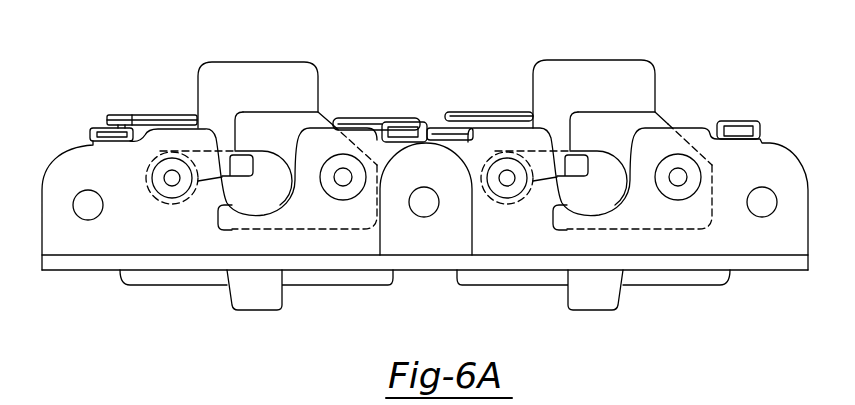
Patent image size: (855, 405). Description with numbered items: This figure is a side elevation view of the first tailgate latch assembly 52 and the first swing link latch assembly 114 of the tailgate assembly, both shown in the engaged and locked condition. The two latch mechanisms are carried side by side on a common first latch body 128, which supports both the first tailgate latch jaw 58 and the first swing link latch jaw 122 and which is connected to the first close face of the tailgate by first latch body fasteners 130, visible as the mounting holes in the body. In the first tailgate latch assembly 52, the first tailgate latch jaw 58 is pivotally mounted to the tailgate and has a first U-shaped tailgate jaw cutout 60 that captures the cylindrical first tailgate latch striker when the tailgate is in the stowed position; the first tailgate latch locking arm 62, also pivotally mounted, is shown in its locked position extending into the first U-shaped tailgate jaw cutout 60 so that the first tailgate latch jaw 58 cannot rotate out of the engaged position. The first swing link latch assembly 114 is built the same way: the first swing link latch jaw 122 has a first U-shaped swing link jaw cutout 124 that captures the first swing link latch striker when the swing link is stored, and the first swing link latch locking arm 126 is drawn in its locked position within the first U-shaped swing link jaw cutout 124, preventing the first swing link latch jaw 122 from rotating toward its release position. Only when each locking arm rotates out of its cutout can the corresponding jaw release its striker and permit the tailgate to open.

The first tailgate latch assembly 52 is at (676, 340).
The first tailgate latch jaw 58 is at (608, 130).
The first U-shaped tailgate jaw cutout 60 is at (605, 190).
The first tailgate latch locking arm 62 is at (567, 160).
The first swing link latch assembly 114 is at (93, 305).
The first swing link latch jaw 122 is at (278, 123).
The first U-shaped swing link jaw cutout 124 is at (260, 190).
The first swing link latch locking arm 126 is at (228, 165).
The common first latch body 128 is at (332, 240).
The first latch body fasteners 130 is at (80, 200).